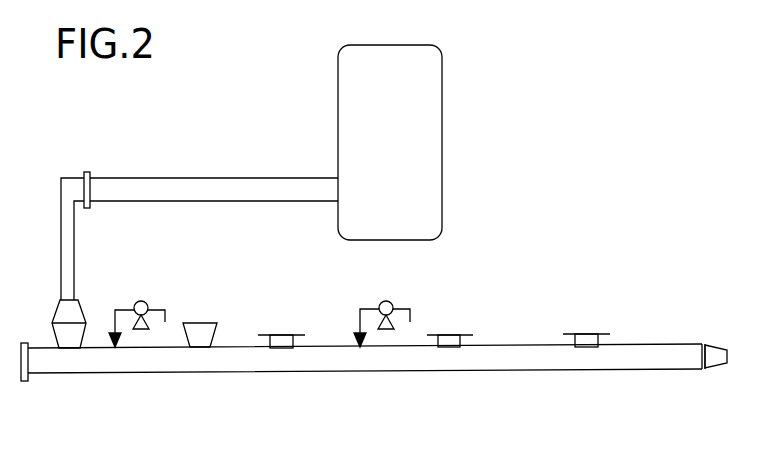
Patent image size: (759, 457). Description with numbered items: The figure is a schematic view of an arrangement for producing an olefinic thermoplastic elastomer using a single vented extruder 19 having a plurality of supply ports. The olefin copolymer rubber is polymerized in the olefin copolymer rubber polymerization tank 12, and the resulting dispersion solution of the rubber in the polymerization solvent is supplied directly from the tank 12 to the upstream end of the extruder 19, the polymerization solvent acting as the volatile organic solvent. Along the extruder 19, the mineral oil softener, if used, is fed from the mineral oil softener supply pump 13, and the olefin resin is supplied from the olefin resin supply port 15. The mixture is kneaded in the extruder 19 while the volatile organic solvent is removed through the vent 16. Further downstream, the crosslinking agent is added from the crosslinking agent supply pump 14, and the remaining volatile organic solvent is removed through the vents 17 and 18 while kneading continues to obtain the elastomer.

The olefin copolymer rubber polymerization tank 12 is at (425, 211).
The mineral oil softener (D) supply pump 13 is at (145, 295).
The crosslinking agent (E) supply pump 14 is at (390, 296).
The olefin resin (C) supply port 15 is at (199, 325).
The vent 16 is at (281, 330).
The vent 17 is at (452, 338).
The vent 18 is at (585, 336).
The extruder 19 is at (500, 370).